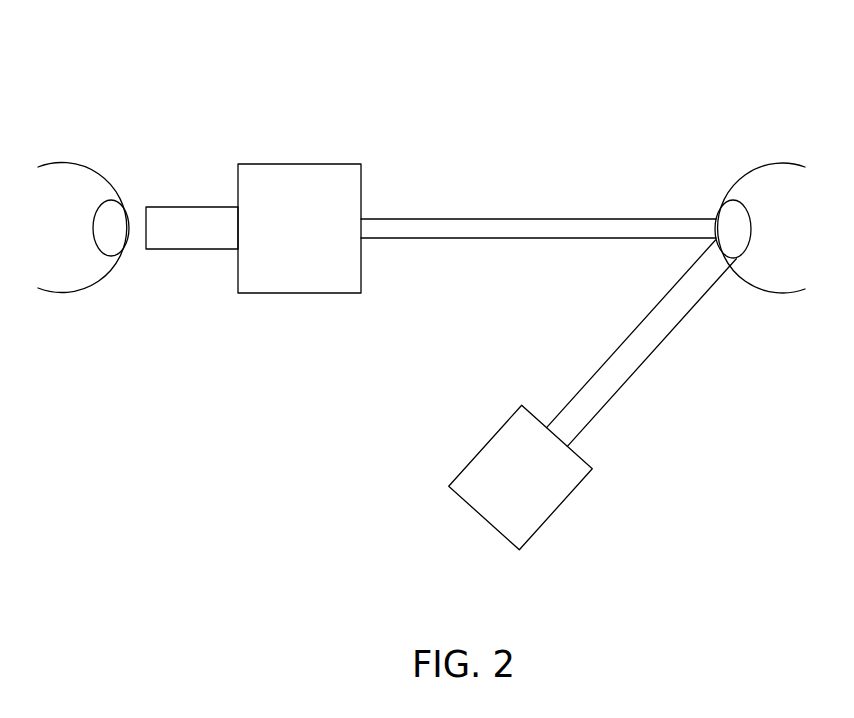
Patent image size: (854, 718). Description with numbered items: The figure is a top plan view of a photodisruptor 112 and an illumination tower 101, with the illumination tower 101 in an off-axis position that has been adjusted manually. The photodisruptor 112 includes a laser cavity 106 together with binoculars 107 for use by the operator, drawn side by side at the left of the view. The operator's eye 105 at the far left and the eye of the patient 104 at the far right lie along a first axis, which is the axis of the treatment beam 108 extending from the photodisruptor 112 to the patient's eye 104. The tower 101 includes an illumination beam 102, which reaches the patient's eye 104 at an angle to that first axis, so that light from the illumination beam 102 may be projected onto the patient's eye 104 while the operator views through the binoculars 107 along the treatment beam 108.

The illumination tower 101 is at (473, 508).
The illumination beam 102 is at (657, 350).
The eye of the patient 104 is at (747, 180).
The operator's eye 105 is at (65, 167).
The laser cavity 106 is at (185, 207).
The binoculars 107 is at (300, 293).
The treatment beam 108 is at (473, 219).
The photodisruptor 112 is at (362, 100).